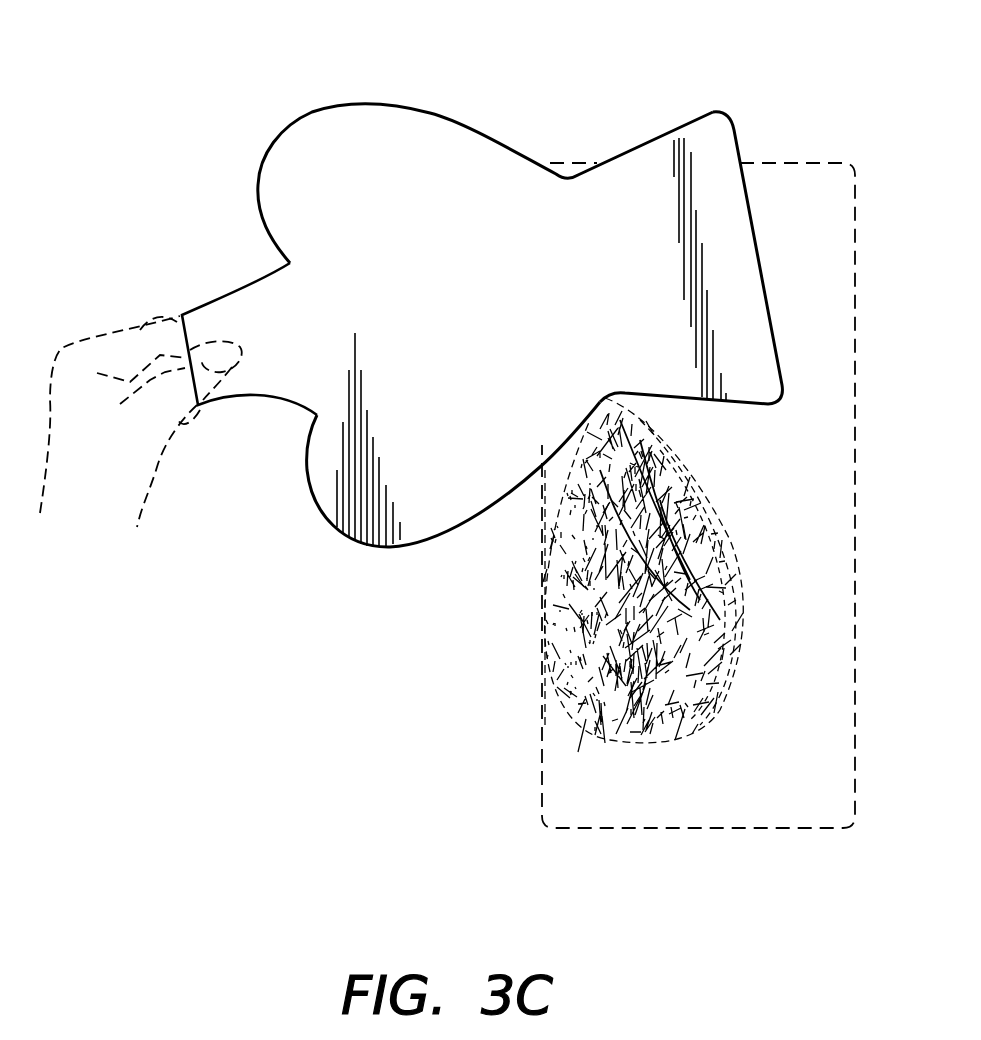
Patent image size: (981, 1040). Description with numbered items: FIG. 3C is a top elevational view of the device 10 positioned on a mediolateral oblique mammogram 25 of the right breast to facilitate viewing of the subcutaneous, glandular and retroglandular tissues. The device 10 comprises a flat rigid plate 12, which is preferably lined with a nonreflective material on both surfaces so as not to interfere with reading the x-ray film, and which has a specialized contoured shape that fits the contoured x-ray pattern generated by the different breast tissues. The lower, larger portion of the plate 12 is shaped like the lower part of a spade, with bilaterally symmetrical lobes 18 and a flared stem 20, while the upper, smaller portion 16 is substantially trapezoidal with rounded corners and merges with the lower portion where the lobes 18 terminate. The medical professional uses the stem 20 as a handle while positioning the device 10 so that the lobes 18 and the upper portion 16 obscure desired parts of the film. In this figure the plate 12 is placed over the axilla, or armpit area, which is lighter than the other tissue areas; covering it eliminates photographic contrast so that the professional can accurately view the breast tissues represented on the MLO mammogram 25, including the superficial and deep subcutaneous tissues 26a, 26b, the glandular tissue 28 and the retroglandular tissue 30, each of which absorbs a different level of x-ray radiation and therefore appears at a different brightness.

The device 10 is at (252, 114).
The flat rigid plate 12 is at (468, 305).
The upper portion 16 is at (745, 273).
The lobes 18 is at (377, 528).
The flared stem 20 is at (225, 308).
The MLO mammogram 25 is at (810, 158).
The superficial subcutaneous tissue 26a is at (700, 502).
The deep subcutaneous tissue 26b is at (710, 587).
The glandular tissue 28 is at (634, 616).
The retroglandular tissue 30 is at (548, 580).